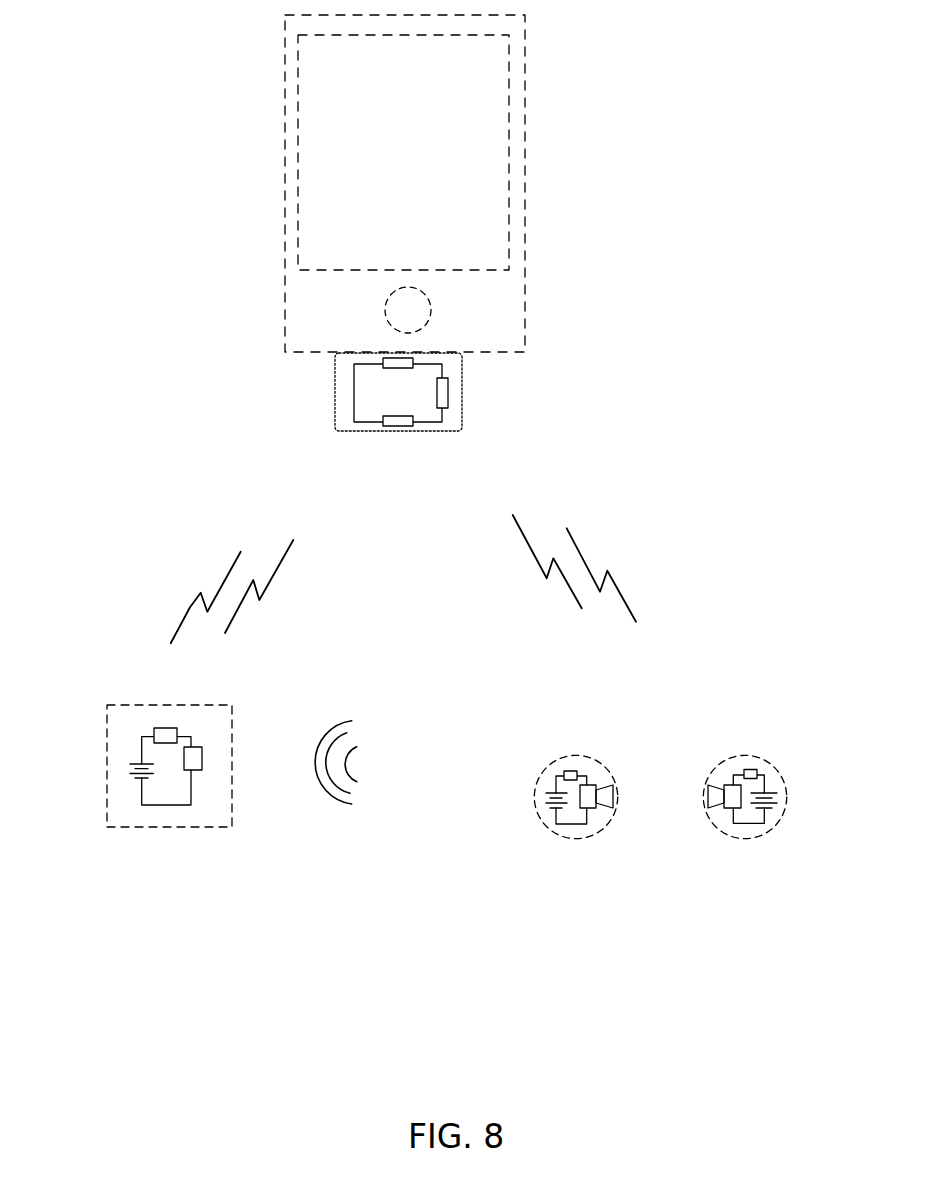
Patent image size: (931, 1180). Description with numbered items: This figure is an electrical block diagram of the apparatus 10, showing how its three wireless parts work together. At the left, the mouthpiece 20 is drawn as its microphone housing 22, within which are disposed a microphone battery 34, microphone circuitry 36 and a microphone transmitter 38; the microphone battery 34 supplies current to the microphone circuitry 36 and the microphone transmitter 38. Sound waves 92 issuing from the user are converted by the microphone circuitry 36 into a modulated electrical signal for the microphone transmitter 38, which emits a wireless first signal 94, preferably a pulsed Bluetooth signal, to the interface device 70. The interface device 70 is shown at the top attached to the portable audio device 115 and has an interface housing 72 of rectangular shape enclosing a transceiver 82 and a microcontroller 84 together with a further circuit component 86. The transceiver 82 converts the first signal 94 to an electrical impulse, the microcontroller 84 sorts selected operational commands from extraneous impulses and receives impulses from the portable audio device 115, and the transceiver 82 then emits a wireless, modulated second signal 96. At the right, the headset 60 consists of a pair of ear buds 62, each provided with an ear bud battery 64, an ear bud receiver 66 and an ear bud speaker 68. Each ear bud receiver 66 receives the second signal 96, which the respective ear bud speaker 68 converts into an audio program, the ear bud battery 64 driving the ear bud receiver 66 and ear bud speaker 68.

The apparatus 10 is at (160, 323).
The portable audio device 115 is at (525, 78).
The interface housing 72 is at (436, 428).
The microcontroller 84 is at (392, 366).
The transceiver 82 is at (400, 421).
The transmitter circuit component 86 is at (443, 398).
The interface device 70 is at (255, 450).
The first signal 94 is at (237, 607).
The second signal 96 is at (567, 578).
The mouthpiece 20 is at (157, 801).
The microphone housing 22 is at (157, 782).
The microphone circuitry 36 is at (154, 732).
The microphone transmitter 38 is at (202, 750).
The microphone battery 34 is at (133, 774).
The sound waves 92 is at (335, 802).
The headset 60 is at (659, 780).
The ear bud 62 is at (659, 818).
The ear bud battery 64 is at (548, 806).
The ear bud receiver 66 is at (564, 771).
The ear bud speaker 68 is at (605, 788).